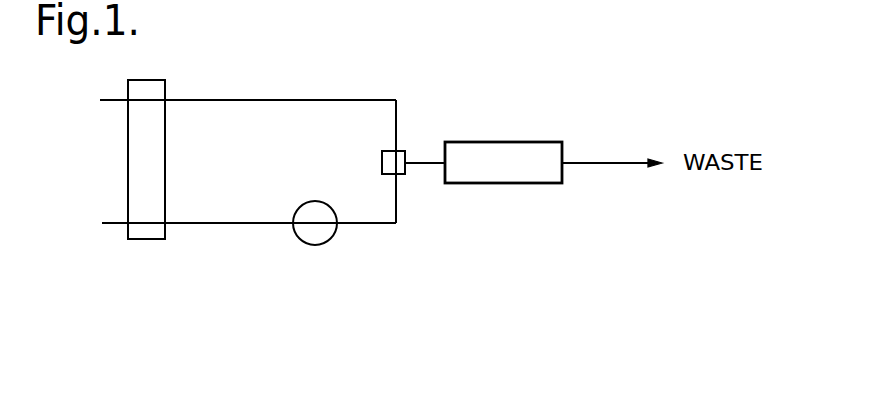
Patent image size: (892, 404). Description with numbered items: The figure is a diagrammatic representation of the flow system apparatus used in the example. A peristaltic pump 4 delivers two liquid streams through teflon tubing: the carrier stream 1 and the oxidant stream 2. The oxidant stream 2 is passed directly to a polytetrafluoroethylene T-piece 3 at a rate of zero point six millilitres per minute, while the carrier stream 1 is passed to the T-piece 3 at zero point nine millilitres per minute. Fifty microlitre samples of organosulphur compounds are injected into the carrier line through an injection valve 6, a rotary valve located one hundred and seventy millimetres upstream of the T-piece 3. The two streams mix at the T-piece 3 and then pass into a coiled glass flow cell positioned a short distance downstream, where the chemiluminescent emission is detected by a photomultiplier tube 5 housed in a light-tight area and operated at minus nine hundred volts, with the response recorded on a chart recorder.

The carrier stream 1 is at (238, 223).
The oxidant stream 2 is at (238, 100).
The T-piece 3 is at (402, 153).
The peristaltic pump 4 is at (160, 86).
The photomultiplier tube 5 is at (552, 150).
The injection valve 6 is at (329, 232).